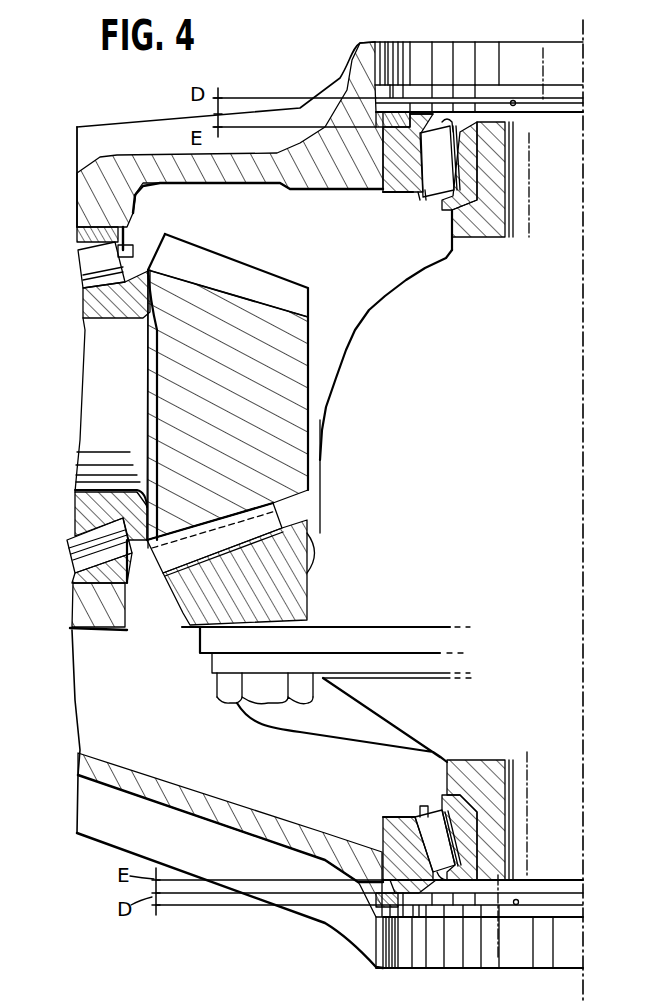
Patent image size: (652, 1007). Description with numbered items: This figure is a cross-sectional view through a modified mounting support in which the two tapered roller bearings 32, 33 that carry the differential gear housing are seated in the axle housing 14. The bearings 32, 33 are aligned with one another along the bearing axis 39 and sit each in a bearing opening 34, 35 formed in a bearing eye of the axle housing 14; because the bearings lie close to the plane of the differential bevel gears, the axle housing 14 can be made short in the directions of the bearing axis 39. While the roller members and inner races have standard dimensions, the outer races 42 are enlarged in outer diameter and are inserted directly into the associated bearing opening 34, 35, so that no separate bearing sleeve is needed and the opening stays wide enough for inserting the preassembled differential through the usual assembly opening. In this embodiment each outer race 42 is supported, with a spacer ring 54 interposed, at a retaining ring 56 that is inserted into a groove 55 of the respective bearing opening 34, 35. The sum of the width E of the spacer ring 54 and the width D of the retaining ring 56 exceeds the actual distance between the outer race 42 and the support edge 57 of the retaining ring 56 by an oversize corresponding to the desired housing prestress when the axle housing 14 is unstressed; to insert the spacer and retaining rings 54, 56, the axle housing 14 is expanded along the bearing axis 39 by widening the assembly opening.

The axle housing 14 is at (112, 120).
The tapered roller bearing 32 is at (487, 905).
The tapered roller bearing 33 is at (435, 108).
The bearing opening 34 is at (386, 905).
The bearing opening 35 is at (381, 60).
The bearing axis 39 is at (584, 69).
The outer race 42 is at (398, 183).
The spacer ring 54 is at (404, 128).
The groove 55 is at (375, 104).
The retaining ring 56 is at (381, 92).
The support edge 57 is at (512, 99).